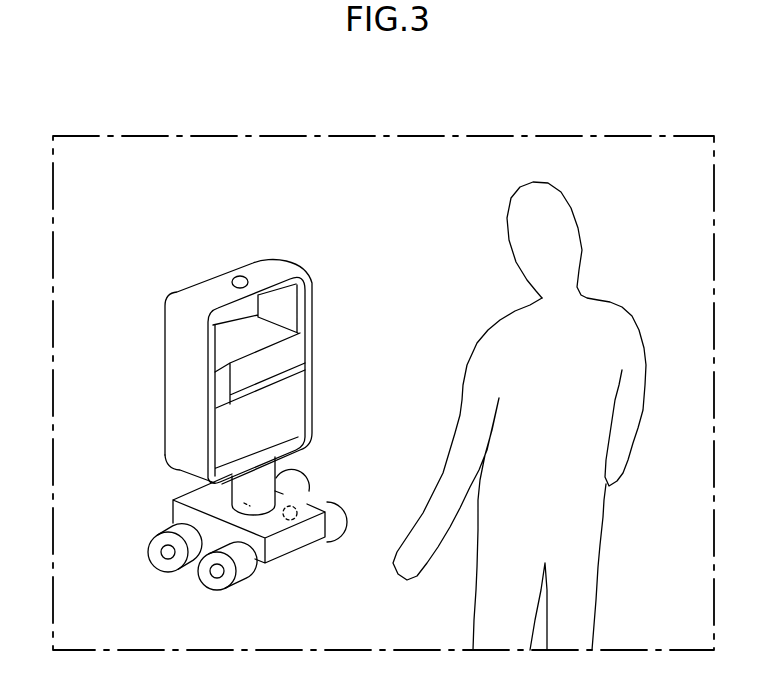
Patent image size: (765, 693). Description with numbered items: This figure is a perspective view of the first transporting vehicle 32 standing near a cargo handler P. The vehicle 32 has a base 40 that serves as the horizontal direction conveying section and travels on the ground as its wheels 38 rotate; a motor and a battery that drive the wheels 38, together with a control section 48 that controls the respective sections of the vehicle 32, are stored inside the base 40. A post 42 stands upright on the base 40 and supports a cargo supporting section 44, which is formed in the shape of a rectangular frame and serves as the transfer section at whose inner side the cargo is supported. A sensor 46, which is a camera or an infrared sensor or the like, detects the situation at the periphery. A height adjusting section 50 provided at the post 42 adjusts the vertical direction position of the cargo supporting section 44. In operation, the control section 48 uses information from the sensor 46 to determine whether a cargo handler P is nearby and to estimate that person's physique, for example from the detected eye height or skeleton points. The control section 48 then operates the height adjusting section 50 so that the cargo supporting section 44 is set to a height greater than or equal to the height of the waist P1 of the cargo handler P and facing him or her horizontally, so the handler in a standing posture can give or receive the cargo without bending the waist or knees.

The first transporting vehicle 32 is at (186, 288).
The cargo supporting section 44 is at (178, 370).
The sensor 46 is at (245, 276).
The post 42 is at (230, 500).
The height adjusting section 50 is at (247, 505).
The control section 48 is at (300, 522).
The base 40 is at (288, 555).
The wheels 38 is at (214, 590).
The cargo handler P is at (575, 208).
The waist P1 is at (588, 514).